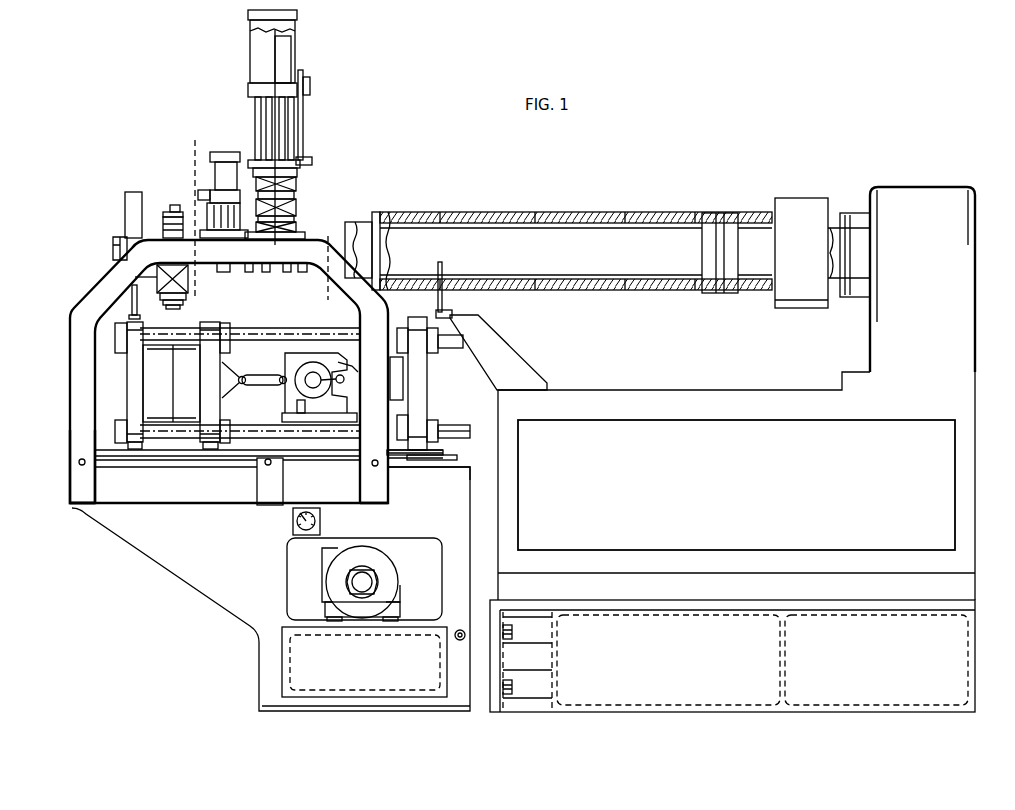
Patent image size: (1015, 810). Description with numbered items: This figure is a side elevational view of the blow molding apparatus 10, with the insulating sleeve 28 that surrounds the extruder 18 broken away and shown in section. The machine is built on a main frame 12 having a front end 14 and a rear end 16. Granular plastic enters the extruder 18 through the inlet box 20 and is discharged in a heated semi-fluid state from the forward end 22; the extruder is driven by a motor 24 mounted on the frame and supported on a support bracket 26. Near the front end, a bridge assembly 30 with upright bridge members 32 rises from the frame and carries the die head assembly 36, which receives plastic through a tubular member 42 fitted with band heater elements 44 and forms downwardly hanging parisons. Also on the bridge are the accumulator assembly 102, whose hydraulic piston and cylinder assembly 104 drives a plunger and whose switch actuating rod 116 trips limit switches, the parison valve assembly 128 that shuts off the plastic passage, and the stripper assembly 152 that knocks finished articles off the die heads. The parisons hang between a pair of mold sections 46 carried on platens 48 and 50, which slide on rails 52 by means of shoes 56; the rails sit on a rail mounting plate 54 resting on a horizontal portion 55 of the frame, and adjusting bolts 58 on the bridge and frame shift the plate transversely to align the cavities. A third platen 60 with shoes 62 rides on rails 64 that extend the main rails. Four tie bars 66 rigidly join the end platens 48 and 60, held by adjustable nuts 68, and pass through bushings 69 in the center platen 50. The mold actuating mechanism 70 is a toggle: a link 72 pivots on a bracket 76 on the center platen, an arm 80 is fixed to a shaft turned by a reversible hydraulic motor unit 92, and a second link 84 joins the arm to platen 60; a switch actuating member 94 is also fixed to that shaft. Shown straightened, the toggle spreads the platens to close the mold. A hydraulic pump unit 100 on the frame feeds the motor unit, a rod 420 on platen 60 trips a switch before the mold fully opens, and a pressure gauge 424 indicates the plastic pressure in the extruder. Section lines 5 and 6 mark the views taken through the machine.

The section line 5- 5 is at (280, 35).
The section line 6- 6 is at (195, 140).
The blow molding apparatus 10 is at (630, 212).
The main frame 12 is at (533, 711).
The front end 14 is at (72, 512).
The rear end 16 is at (973, 474).
The extruder 18 is at (647, 235).
The inlet box 20 is at (815, 207).
The forward end 22 is at (365, 230).
The motor 24 is at (960, 216).
The support bracket 26 is at (497, 355).
The insulating sleeve 28 is at (648, 280).
The bridge assembly 30 is at (68, 343).
The bridge members 32 is at (82, 381).
The die head assembly 36 is at (165, 205).
The tubular member 42 is at (257, 273).
The band heater elements 44 is at (284, 275).
The mold sections 46 is at (178, 375).
The platen 48 is at (133, 393).
The center platen 50 is at (208, 371).
The rails 52 is at (113, 455).
The rail mounting plate 54 is at (173, 462).
The horizontal portion 55 is at (457, 466).
The shoes 56 is at (133, 451).
The adjusting bolts 58 is at (79, 463).
The third platen 60 is at (420, 384).
The shoes 62 is at (441, 428).
The rails 64 is at (432, 460).
The tie bars 66 is at (257, 338).
The adjustable nuts 68 is at (115, 321).
The bushings 69 is at (222, 333).
The mold actuating mechanism 70 is at (352, 368).
The link 72 is at (283, 386).
The bracket 76 is at (183, 315).
The arm 80 is at (286, 384).
The second link 84 is at (345, 379).
The hydraulic motor unit 92 is at (295, 355).
The switch actuating member 94 is at (320, 393).
The hydraulic pump unit 100 is at (382, 562).
The accumulator assembly 102 is at (250, 60).
The hydraulic piston and cylinder assembly 104 is at (285, 60).
The switch actuating rod 116 is at (303, 125).
The parison valve assembly 128 is at (235, 150).
The stripper assembly 152 is at (123, 220).
The rod 420 is at (403, 416).
The pressure gauge 424 is at (322, 521).